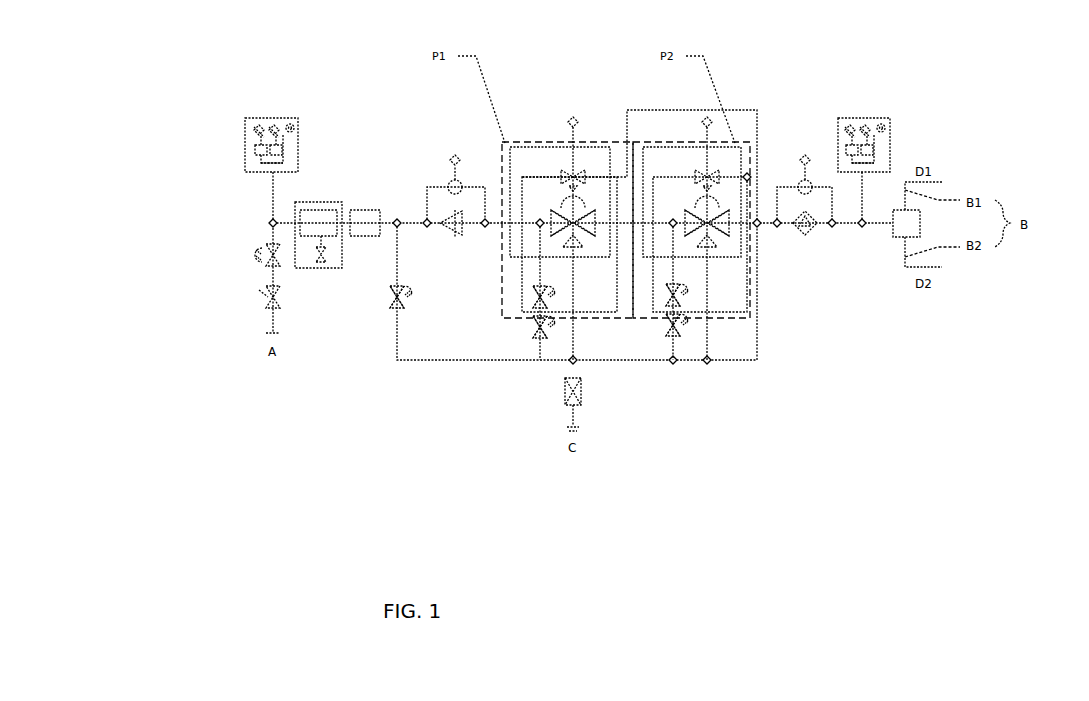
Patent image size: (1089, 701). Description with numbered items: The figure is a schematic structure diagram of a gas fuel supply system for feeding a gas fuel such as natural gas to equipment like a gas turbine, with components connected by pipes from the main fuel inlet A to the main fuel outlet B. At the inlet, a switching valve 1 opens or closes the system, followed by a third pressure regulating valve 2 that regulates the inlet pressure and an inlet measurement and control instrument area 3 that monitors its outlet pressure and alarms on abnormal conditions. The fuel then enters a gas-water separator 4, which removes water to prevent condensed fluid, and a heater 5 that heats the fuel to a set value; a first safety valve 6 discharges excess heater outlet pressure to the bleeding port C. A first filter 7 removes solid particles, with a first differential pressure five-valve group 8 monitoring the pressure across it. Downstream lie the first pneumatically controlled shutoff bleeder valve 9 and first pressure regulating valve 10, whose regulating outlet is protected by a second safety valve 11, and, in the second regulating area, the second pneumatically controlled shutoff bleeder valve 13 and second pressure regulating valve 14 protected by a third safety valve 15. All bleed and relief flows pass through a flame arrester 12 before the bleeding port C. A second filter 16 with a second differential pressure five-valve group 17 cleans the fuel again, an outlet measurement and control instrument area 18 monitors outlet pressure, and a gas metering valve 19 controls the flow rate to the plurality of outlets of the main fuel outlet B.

The switching valve 1 is at (270, 303).
The third pressure regulating valve 2 is at (268, 250).
The inlet measurement and control instrument area 3 is at (266, 117).
The gas-water separator 4 is at (326, 202).
The heater 5 is at (364, 237).
The first safety valve 6 is at (391, 307).
The first filter 7 is at (455, 243).
The first differential pressure five-valve group 8 is at (449, 167).
The first pneumatically controlled shutoff bleeder valve 9 is at (553, 142).
The first pressure regulating valve 10 is at (540, 297).
The second safety valve 11 is at (537, 327).
The flame arrester 12 is at (567, 383).
The second pneumatically controlled shutoff bleeder valve 13 is at (665, 143).
The second pressure regulating valve 14 is at (672, 292).
The third safety valve 15 is at (675, 322).
The second filter 16 is at (807, 237).
The second differential pressure five-valve group 17 is at (797, 170).
The outlet measurement and control instrument area 18 is at (838, 118).
The gas metering valve 19 is at (893, 237).